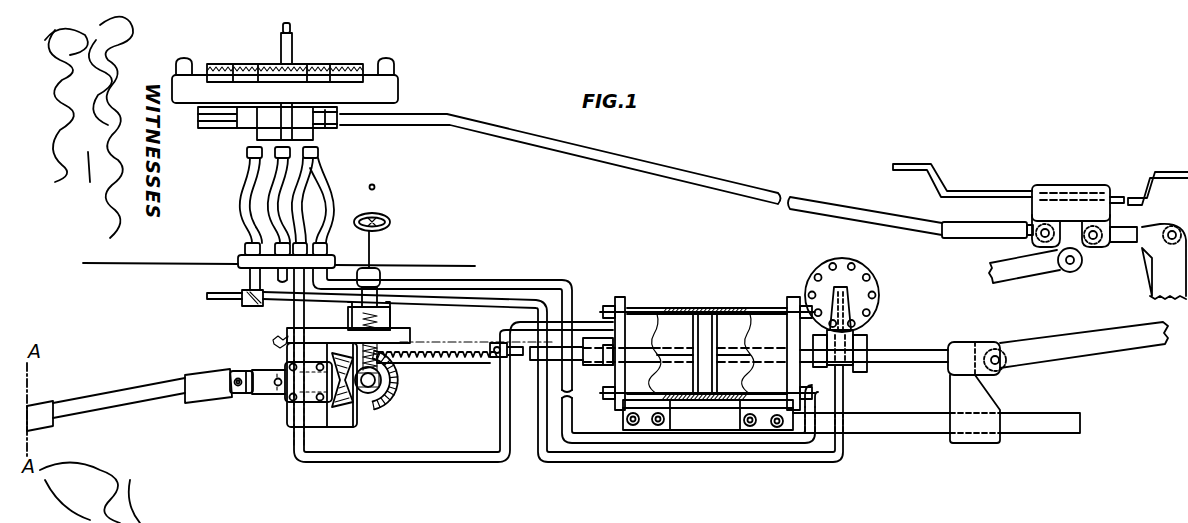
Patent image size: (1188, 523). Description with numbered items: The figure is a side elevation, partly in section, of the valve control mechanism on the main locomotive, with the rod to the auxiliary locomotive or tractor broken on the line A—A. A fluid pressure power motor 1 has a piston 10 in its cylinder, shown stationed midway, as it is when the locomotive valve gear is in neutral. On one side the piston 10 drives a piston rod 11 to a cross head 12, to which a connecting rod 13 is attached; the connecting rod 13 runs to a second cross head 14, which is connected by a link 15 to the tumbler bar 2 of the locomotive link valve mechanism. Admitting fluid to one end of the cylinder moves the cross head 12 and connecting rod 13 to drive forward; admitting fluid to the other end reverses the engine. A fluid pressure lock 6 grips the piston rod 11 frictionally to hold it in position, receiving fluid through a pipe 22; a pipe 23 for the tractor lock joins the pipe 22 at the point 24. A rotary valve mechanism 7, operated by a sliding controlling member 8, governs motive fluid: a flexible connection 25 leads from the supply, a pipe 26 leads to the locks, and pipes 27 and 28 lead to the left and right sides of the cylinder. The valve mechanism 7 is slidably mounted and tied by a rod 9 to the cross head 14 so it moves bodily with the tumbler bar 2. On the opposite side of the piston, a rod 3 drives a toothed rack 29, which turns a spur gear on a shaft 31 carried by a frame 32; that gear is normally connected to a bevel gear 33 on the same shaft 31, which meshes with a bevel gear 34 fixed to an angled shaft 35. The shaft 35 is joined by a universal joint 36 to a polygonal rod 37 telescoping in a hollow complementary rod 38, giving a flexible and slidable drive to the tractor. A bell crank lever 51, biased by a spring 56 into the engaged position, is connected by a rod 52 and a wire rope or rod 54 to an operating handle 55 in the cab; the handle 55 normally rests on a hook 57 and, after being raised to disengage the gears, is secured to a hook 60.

The power motor 1 is at (673, 306).
The tumbler bar 2 is at (1164, 261).
The rod 3 is at (540, 357).
The fluid pressure lock 6 is at (868, 281).
The valve mechanism 7 is at (273, 128).
The controlling member 8 is at (284, 72).
The rod 9 is at (717, 179).
The piston 10 is at (706, 322).
The piston rod 11 is at (920, 350).
The cross head 12 is at (957, 390).
The connecting rod 13 is at (1027, 273).
The cross head 14 is at (1070, 195).
The link 15 is at (1123, 244).
The pipe 22 is at (278, 301).
The pipe 23 is at (217, 301).
The point 24 is at (245, 297).
The connection 25 is at (273, 186).
The pipe 26 is at (239, 199).
The pipe 27 is at (297, 209).
The pipe 28 is at (313, 185).
The toothed rack 29 is at (452, 344).
The shaft 31 is at (382, 408).
The frame 32 is at (307, 423).
The bevel gear 33 is at (390, 398).
The bevel gear 34 is at (343, 413).
The shaft 35 is at (313, 384).
The universal joint 36 is at (243, 394).
The polygonal rod 37 is at (98, 392).
The hollow complementary rod 38 is at (45, 403).
The bell crank lever 51 is at (352, 310).
The rod 52 is at (372, 290).
The wire rope or rod 54 is at (372, 253).
The operating handle 55 is at (391, 222).
The spring 56 is at (395, 351).
The hook 57 is at (376, 217).
The hook 60 is at (374, 185).